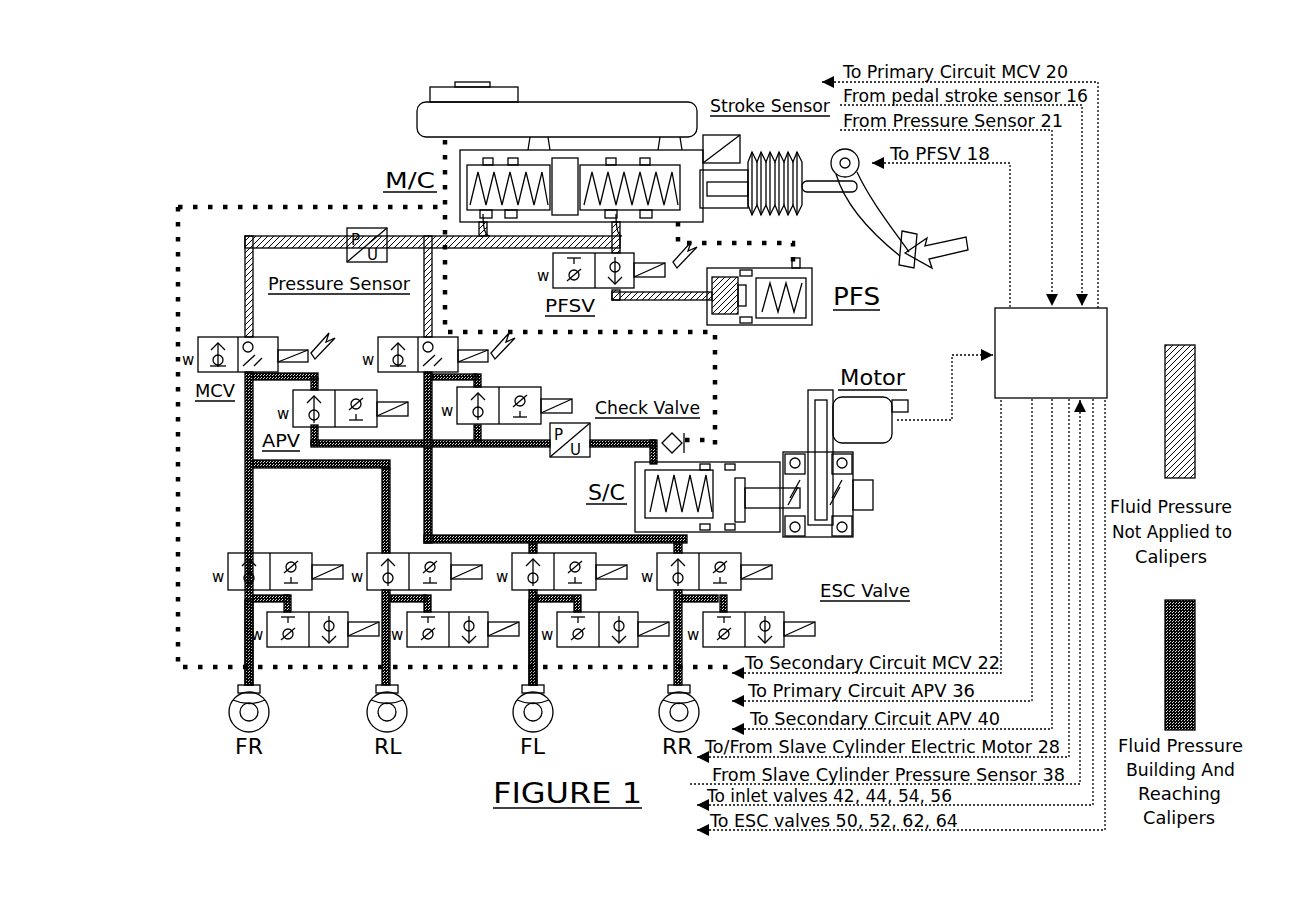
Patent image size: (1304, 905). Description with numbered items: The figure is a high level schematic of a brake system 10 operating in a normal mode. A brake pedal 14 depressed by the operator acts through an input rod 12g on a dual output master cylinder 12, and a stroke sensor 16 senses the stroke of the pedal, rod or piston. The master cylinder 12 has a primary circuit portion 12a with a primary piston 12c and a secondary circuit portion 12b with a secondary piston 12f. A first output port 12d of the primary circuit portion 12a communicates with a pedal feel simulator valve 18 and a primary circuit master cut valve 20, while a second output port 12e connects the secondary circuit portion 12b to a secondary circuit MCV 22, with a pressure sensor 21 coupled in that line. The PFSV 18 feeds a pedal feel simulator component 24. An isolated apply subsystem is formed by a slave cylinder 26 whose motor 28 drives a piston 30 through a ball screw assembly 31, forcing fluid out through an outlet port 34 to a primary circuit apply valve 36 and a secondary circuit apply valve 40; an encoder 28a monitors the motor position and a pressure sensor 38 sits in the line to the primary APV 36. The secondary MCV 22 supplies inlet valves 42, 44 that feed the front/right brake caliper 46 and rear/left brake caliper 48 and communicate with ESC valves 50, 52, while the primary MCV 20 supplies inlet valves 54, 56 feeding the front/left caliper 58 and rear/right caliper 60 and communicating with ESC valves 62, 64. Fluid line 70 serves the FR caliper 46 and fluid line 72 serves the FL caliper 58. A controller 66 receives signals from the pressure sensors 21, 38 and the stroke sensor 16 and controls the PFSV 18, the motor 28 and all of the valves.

The brake system 10 is at (258, 125).
The master cylinder 12 is at (607, 155).
The primary circuit portion 12a is at (574, 147).
The secondary circuit portion 12b is at (470, 196).
The primary piston 12c is at (607, 166).
The first output port 12d is at (624, 228).
The second output port 12e is at (492, 228).
The secondary piston 12f is at (470, 108).
The input rod 12g is at (810, 187).
The brake pedal 14 is at (862, 208).
The stroke sensor 16 is at (705, 135).
The pedal feel simulator valve 18 is at (538, 273).
The primary circuit master cut valve 20 is at (405, 337).
The pressure sensor 21 is at (345, 232).
The secondary circuit master cut valve 22 is at (266, 337).
The pedal feel simulator component 24 is at (795, 327).
The slave cylinder 26 is at (790, 474).
The slave cylinder motor 28 is at (882, 426).
The isolated apply component position sensor 28a is at (908, 405).
The piston 30 is at (725, 487).
The ball screw assembly 31 is at (847, 477).
The outlet port 34 is at (648, 462).
The primary circuit apply valve 36 is at (527, 387).
The pressure sensor 38 is at (580, 423).
The secondary circuit apply valve 40 is at (318, 390).
The secondary circuit inlet valve 42 is at (272, 553).
The secondary circuit inlet valve 44 is at (380, 553).
The front/right brake caliper 46 is at (232, 693).
The rear/left brake caliper 48 is at (372, 692).
The secondary circuit electronic stability control valve 50 is at (300, 612).
The secondary circuit electronic stability control valve 52 is at (452, 612).
The primary circuit inlet valve 54 is at (590, 582).
The primary circuit inlet valve 56 is at (735, 551).
The front/left brake caliper 58 is at (517, 698).
The rear/right brake caliper 60 is at (664, 693).
The primary circuit ESC valve 62 is at (584, 650).
The primary circuit ESC valve 64 is at (790, 612).
The controller 66 is at (1062, 380).
The fluid line 70 is at (242, 636).
The fluid line 72 is at (532, 643).